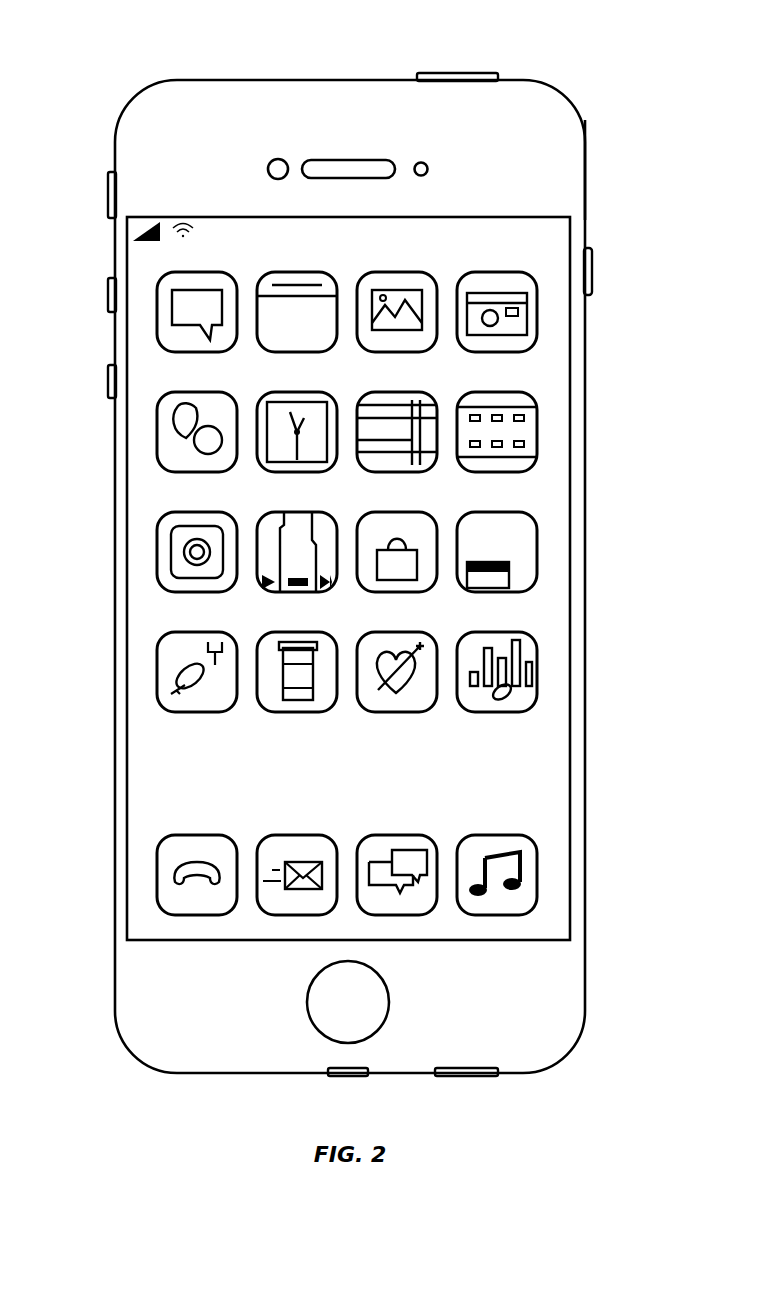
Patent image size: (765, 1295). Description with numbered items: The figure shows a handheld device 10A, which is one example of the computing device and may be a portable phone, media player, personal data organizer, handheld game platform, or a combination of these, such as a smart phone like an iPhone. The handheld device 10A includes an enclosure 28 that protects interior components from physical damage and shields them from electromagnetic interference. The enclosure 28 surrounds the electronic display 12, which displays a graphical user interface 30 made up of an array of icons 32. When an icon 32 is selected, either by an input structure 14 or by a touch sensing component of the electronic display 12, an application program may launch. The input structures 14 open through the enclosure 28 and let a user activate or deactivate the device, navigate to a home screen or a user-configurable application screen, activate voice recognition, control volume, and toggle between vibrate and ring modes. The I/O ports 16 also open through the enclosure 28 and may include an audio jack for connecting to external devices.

The handheld device 10A is at (116, 75).
The electronic display 12 is at (572, 625).
The input structure 14 is at (459, 72).
The I/O ports 16 is at (205, 1075).
The enclosure 28 is at (587, 170).
The graphical user interface 30 is at (551, 497).
The icon 32 is at (400, 713).